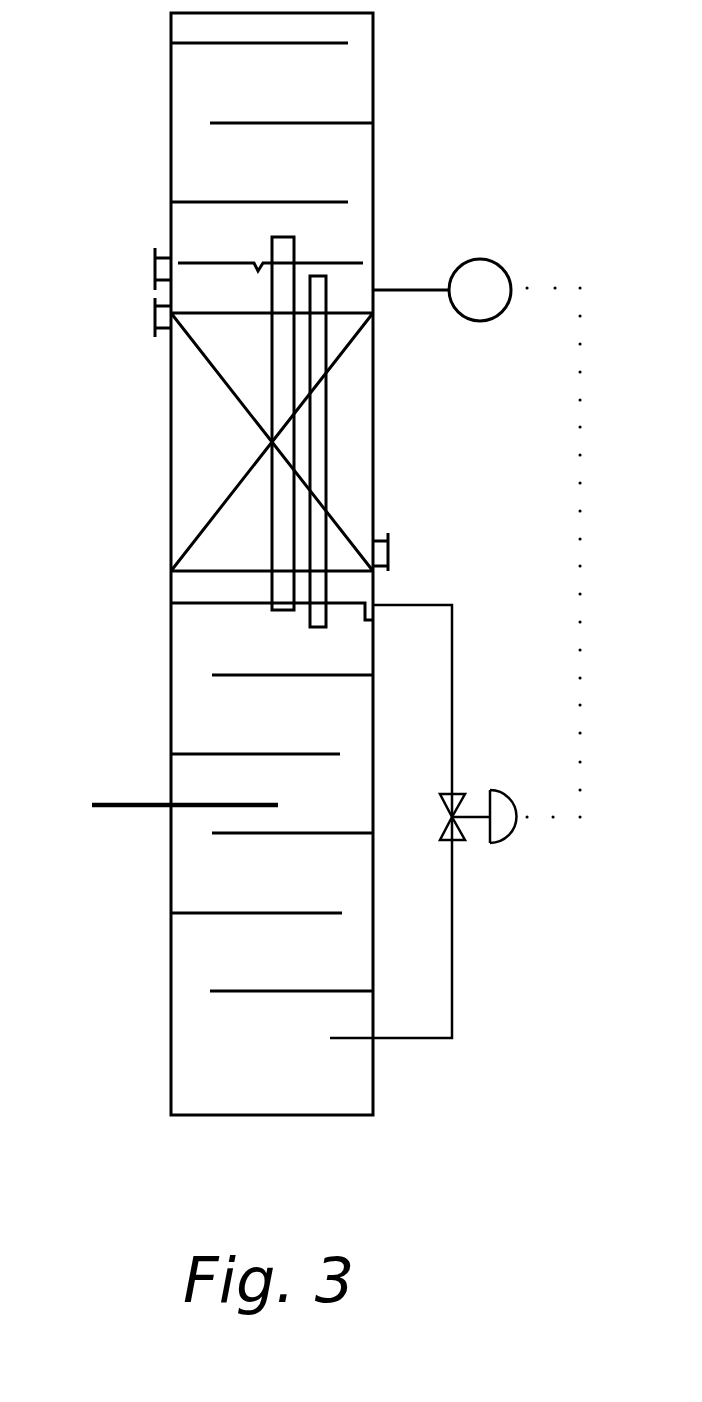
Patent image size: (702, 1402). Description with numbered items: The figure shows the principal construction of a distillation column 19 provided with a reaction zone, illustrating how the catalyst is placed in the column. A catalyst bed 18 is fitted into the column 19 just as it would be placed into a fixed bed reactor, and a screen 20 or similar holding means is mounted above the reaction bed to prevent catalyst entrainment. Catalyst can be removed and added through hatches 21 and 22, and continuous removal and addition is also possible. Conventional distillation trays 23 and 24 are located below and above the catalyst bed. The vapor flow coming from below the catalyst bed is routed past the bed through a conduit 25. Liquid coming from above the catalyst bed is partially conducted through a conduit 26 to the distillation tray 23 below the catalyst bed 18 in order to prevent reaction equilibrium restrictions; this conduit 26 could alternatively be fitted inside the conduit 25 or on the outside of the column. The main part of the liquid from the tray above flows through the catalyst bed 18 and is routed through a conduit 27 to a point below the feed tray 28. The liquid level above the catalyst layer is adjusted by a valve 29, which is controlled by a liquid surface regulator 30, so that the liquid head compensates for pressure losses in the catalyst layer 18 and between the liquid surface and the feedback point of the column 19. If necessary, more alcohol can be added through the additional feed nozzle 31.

The catalyst bed 18 is at (183, 480).
The column 19 is at (171, 100).
The screen 20 is at (373, 277).
The hatch 21 is at (392, 553).
The hatch 22 is at (155, 314).
The distillation tray 23 is at (228, 673).
The distillation tray 24 is at (328, 202).
The conduit 25 is at (270, 378).
The conduit 26 is at (320, 456).
The conduit 27 is at (452, 685).
The feed tray 28 is at (200, 810).
The valve 29 is at (500, 832).
The liquid surface regulator 30 is at (500, 262).
The additional feed nozzle 31 is at (155, 268).